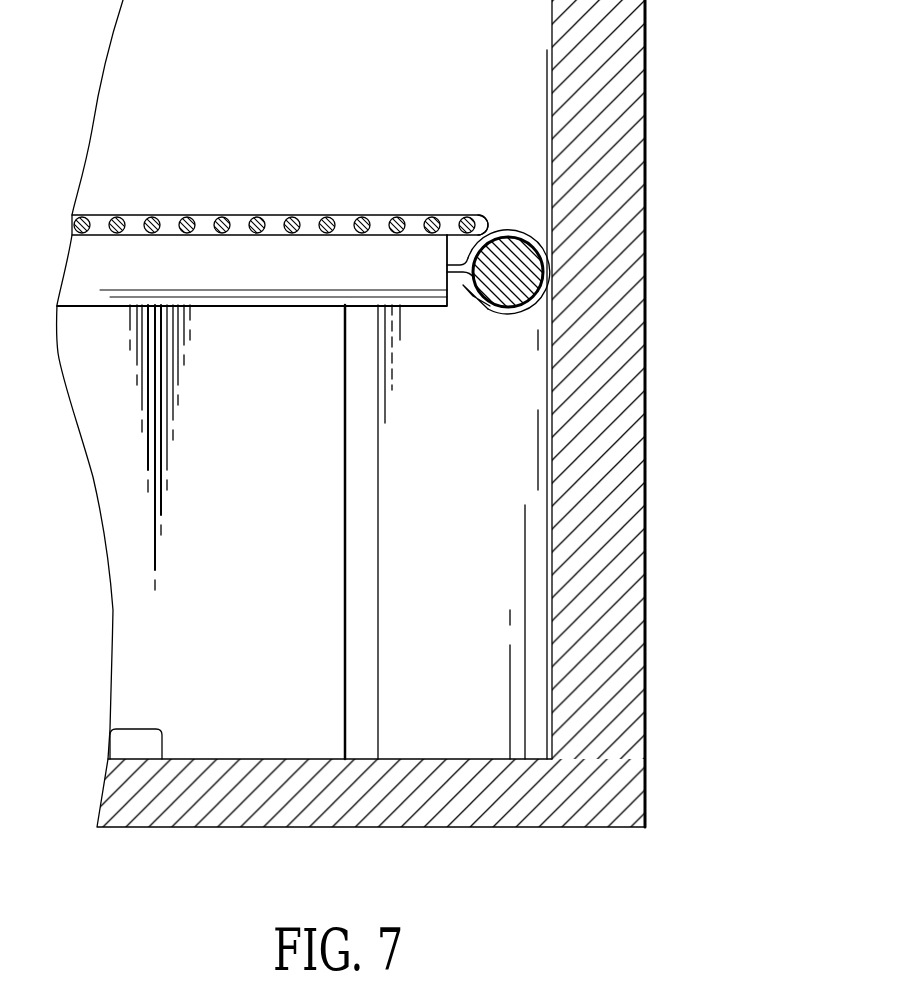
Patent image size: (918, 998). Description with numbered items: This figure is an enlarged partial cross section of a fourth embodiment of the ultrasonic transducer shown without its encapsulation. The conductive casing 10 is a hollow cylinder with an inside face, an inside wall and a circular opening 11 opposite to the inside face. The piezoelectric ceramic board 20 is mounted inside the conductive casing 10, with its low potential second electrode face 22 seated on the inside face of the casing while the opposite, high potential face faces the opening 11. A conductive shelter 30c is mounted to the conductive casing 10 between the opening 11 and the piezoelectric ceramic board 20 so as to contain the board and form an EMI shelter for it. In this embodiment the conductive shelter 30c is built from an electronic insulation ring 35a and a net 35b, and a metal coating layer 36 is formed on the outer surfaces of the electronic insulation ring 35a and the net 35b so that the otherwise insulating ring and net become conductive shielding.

The conductive casing 10 is at (620, 532).
The opening 11 is at (552, 175).
The piezoelectric ceramic board 20 is at (127, 728).
The second electrode face 22 is at (130, 760).
The conductive shelter 30c is at (391, 235).
The electronic insulation ring 35a is at (527, 264).
The net 35b is at (333, 217).
The metal coating layer 36 is at (178, 217).